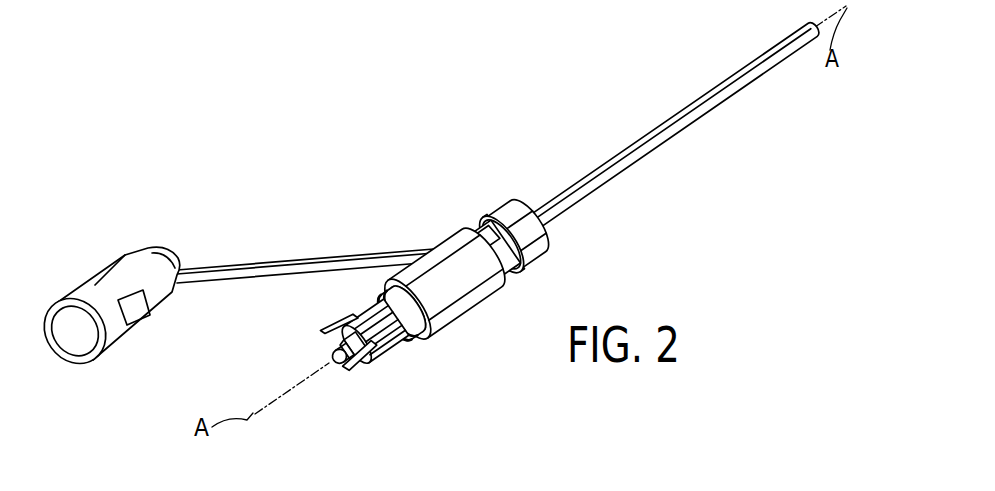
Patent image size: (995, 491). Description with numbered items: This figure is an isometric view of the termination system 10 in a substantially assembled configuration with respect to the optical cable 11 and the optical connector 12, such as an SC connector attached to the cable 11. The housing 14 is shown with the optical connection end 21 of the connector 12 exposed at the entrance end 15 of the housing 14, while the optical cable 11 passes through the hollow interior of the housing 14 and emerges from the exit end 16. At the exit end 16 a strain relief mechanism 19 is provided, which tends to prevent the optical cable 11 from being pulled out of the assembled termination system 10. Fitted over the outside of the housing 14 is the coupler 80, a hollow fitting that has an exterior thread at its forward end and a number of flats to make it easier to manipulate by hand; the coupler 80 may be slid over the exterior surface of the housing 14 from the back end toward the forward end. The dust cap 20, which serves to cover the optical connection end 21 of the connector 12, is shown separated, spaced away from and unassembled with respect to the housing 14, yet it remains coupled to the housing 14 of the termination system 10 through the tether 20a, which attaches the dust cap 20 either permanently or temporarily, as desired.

The termination system 10 is at (464, 185).
The optical cable 11 is at (665, 133).
The optical connector 12 is at (372, 380).
The housing 14 is at (398, 350).
The entrance end 15 is at (309, 321).
The exit end 16 is at (496, 194).
The strain relief mechanism 19 is at (538, 271).
The dust cap 20 is at (90, 286).
The tether 20a is at (274, 268).
The optical connection end 21 is at (308, 362).
The coupler 80 is at (458, 323).